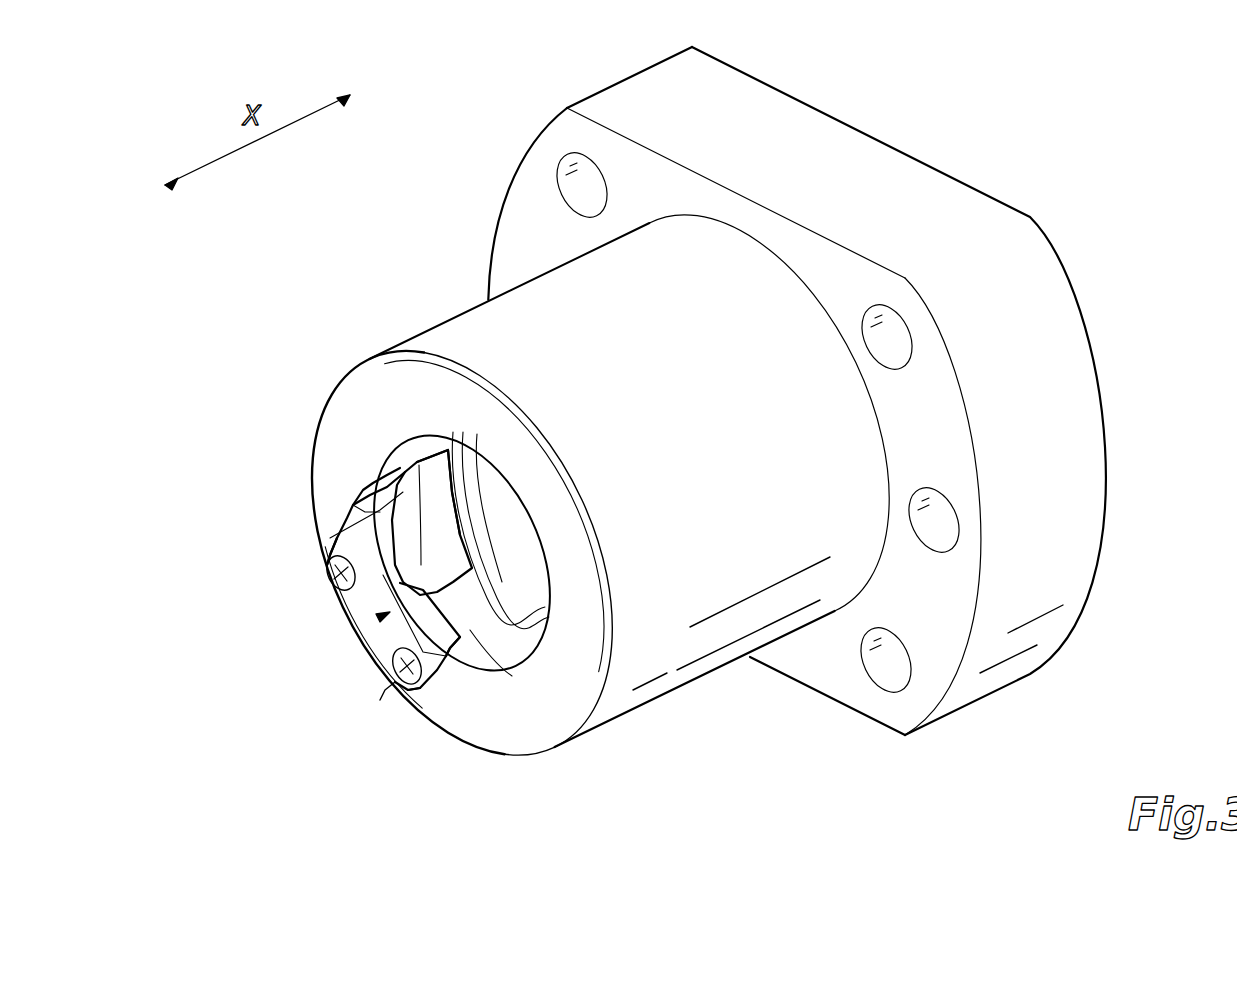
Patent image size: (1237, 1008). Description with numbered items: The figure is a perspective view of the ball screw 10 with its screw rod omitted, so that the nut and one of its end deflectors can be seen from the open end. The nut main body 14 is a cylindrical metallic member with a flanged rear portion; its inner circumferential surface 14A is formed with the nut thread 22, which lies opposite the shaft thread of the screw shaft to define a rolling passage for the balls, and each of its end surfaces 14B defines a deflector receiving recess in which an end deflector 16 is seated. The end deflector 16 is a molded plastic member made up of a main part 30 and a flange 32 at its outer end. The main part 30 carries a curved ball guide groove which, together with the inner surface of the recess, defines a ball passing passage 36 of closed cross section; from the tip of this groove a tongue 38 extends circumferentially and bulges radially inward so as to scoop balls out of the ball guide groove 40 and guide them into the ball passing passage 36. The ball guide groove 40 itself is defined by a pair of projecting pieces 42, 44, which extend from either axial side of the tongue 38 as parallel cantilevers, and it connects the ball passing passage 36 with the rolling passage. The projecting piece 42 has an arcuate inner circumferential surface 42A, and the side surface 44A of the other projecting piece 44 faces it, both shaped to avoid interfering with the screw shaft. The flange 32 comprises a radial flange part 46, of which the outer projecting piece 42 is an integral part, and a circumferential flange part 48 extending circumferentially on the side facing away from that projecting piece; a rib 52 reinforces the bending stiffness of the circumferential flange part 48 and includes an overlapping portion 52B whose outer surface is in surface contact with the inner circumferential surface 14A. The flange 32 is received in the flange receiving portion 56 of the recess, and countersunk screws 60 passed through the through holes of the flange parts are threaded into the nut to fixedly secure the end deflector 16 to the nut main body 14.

The assembly 10 is at (391, 277).
The nut main body 14 is at (720, 668).
The inner circumferential surface 14A is at (513, 700).
The end surfaces 14B is at (328, 424).
The end deflector 16 is at (378, 637).
The nut thread 22 is at (392, 462).
The main part 30 is at (438, 542).
The flange 32 is at (347, 623).
The ball passing passage 36 is at (492, 637).
The tongue 38 is at (378, 618).
The ball guide groove 40 is at (353, 503).
The projecting piece 42 is at (372, 480).
The inner circumferential surface 42A is at (327, 553).
The projecting piece 44 is at (436, 434).
The lug side surface 44A is at (462, 450).
The radial flange part 46 is at (357, 508).
The circumferential flange part 48 is at (417, 692).
The rib 52 is at (450, 668).
The overlapping portion 52B is at (484, 660).
The flange receiving portion 56 is at (392, 688).
The screws 60 is at (330, 582).